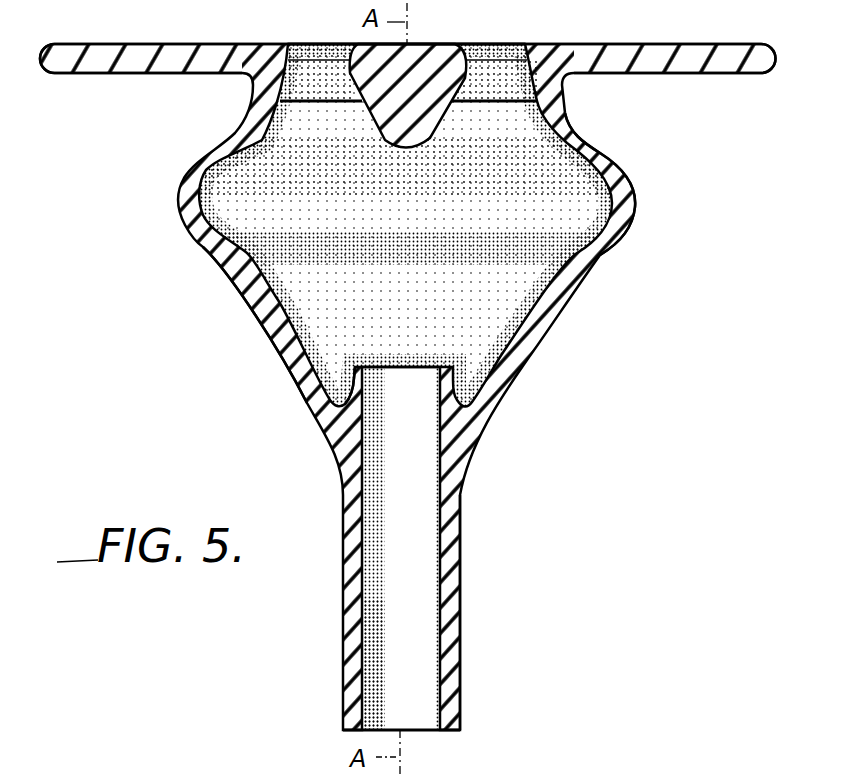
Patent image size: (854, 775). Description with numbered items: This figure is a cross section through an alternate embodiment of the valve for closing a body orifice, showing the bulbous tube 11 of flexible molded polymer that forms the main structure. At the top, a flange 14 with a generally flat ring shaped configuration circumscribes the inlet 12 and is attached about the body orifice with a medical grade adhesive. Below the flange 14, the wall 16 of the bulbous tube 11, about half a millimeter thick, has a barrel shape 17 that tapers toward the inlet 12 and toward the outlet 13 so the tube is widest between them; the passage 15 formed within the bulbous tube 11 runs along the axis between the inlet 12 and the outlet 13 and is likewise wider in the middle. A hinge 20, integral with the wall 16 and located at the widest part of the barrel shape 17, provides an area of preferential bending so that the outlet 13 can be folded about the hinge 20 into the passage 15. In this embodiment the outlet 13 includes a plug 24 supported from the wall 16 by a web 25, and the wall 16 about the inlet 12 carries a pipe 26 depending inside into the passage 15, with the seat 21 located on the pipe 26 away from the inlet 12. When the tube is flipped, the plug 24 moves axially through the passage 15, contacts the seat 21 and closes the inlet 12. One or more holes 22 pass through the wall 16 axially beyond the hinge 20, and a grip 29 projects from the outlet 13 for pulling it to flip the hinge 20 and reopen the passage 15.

The bulbous tube 11 is at (528, 363).
The inlet 12 is at (528, 45).
The outlet 13 is at (423, 725).
The flange 14 is at (713, 46).
The passage 15 is at (317, 185).
The wall 16 is at (257, 310).
The barrel shape 17 is at (659, 143).
The hinge 20 is at (612, 197).
The seat 21 is at (353, 368).
The holes 22 is at (362, 693).
The plug 24 is at (430, 57).
The web 25 is at (492, 70).
The pipe 26 is at (372, 398).
The grip 29 is at (460, 631).